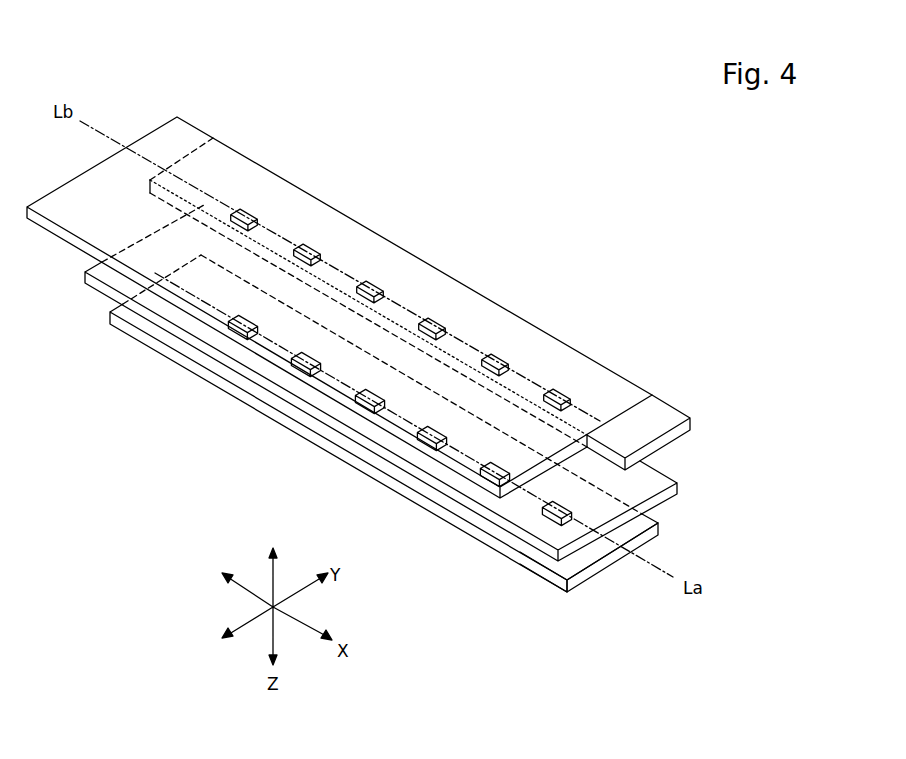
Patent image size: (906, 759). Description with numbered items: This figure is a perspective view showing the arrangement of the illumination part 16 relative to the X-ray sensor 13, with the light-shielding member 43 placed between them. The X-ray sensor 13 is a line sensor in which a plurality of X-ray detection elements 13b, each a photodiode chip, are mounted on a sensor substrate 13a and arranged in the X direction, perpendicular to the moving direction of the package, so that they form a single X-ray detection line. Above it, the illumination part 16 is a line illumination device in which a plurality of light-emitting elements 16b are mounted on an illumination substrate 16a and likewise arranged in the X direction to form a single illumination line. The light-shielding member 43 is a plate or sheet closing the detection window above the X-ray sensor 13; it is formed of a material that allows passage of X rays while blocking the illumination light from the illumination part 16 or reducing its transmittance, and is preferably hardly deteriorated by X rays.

The X-ray sensor 13 is at (595, 578).
The sensor substrate 13a is at (538, 574).
The X-ray detection elements 13b is at (300, 373).
The illumination part 16 is at (698, 428).
The illumination substrate 16a is at (666, 412).
The light-emitting elements 16b is at (312, 243).
The light-shielding member 43 is at (679, 486).